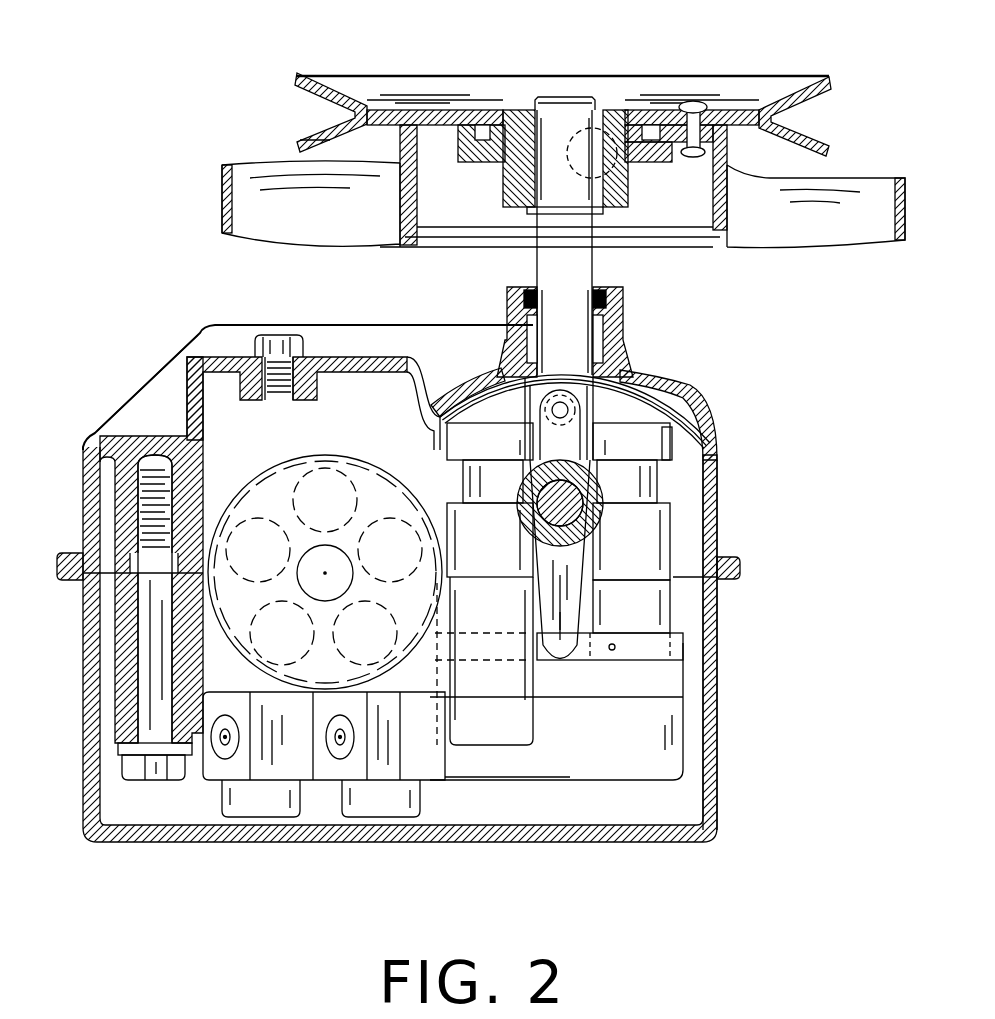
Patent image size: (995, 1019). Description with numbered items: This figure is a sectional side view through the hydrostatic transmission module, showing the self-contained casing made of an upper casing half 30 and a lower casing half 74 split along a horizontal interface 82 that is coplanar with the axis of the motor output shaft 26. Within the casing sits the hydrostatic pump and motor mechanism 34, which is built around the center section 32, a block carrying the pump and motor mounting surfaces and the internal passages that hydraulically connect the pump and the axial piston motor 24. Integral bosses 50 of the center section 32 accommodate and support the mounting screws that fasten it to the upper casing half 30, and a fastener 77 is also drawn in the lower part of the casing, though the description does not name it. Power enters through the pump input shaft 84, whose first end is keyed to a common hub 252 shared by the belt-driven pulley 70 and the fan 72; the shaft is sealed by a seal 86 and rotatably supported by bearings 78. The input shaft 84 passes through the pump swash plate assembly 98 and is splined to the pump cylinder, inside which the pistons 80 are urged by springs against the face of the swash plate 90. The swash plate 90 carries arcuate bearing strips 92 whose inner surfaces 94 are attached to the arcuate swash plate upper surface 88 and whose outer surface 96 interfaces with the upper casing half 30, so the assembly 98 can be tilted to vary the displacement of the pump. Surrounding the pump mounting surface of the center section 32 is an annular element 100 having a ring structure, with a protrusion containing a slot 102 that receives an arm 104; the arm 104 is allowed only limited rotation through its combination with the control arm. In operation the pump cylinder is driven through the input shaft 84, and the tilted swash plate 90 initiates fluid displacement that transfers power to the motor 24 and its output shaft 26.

The axial piston motor 24 is at (268, 457).
The motor output shaft 26 is at (325, 556).
The upper casing half 30 is at (85, 500).
The center section 32 is at (668, 737).
The hydrostatic pump and motor mechanism 34 is at (355, 400).
The integral bosses 50 is at (118, 700).
The pulley 70 is at (340, 74).
The fan 72 is at (222, 204).
The lower casing half 74 is at (84, 616).
The nut 77 is at (120, 750).
The bearings 78 is at (505, 330).
The pistons 80 is at (503, 493).
The horizontal interface 82 is at (728, 560).
The pump input shaft 84 is at (583, 265).
The seal 86 is at (607, 298).
The arcuate swash plate upper surface 88 is at (450, 397).
The swash plate 90 is at (625, 412).
The arcuate bearing strips 92 is at (680, 430).
The inner surfaces 94 is at (667, 415).
The outer surface 96 is at (640, 417).
The pump swash plate assembly 98 is at (678, 447).
The annular element 100 is at (683, 645).
The slot 102 is at (575, 660).
The arm 104 is at (567, 608).
The common hub 252 is at (613, 127).